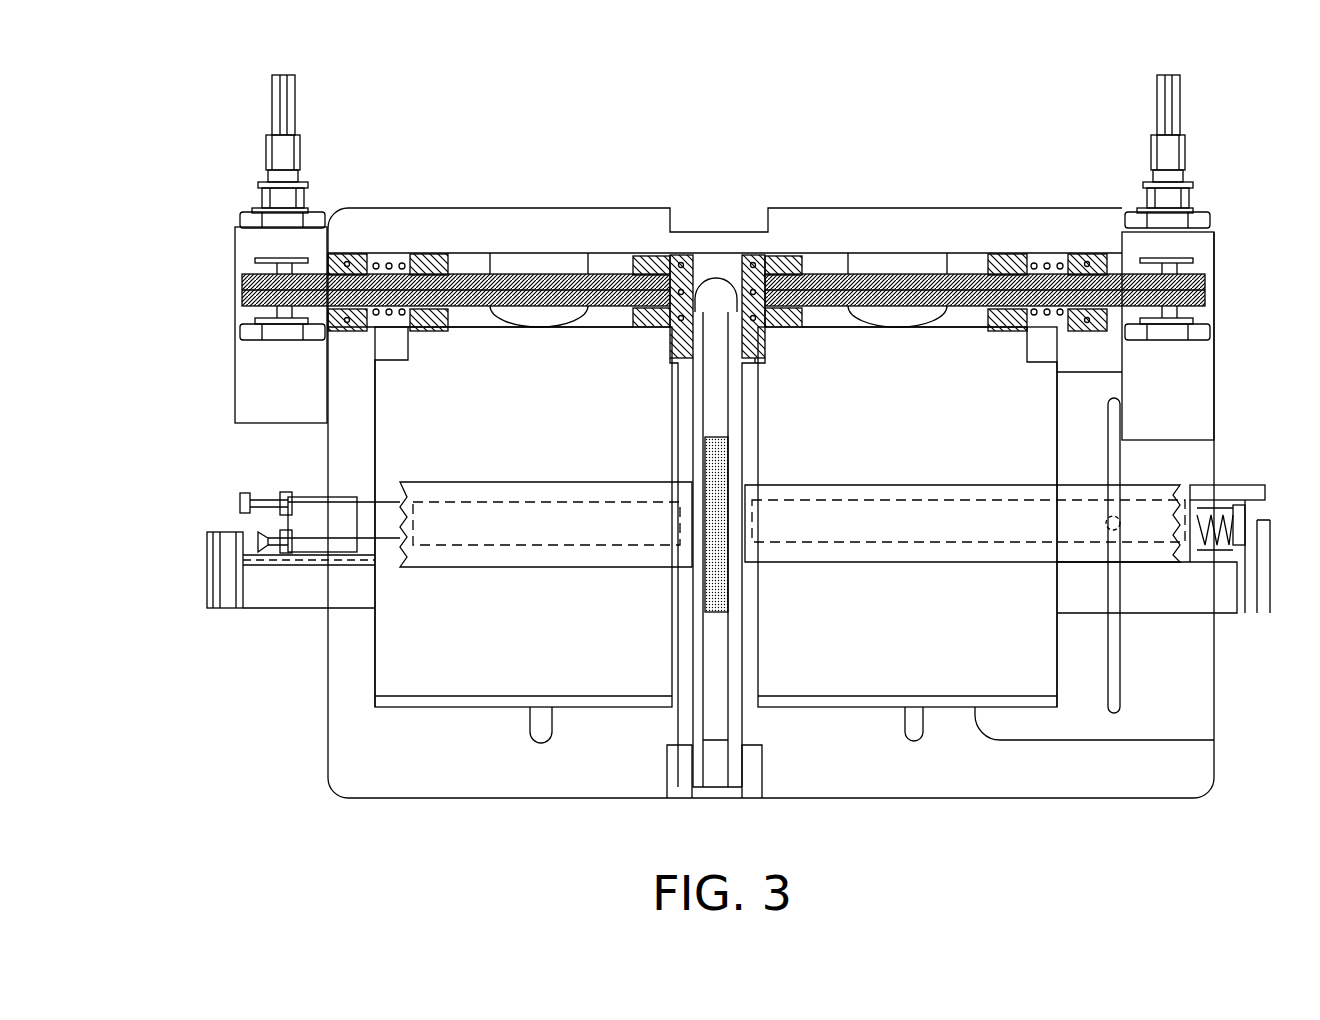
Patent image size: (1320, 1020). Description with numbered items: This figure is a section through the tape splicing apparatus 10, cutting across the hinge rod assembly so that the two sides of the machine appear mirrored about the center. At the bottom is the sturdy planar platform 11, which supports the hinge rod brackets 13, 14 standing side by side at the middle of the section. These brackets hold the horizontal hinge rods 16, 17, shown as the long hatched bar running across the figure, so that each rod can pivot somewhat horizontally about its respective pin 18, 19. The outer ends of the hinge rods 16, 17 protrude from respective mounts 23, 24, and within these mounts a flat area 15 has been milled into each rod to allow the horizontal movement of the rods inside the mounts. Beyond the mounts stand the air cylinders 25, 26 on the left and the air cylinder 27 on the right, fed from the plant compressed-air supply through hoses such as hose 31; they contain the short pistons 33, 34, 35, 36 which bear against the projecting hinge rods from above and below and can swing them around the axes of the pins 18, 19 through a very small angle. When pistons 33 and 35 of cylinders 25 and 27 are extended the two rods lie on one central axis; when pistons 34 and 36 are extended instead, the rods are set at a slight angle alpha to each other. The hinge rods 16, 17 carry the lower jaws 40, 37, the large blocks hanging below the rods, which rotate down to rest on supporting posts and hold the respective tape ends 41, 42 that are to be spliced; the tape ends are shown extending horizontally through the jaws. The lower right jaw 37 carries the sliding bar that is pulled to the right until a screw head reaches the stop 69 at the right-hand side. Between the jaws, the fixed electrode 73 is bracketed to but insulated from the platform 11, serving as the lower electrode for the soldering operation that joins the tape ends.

The apparatus 10 is at (1197, 828).
The planar platform 11 is at (884, 800).
The hinge rod bracket 13 is at (678, 364).
The hinge rod bracket 14 is at (757, 368).
The flat area 15 is at (1110, 270).
The hinge rod 16 is at (500, 272).
The hinge rod 17 is at (940, 270).
The pin 18 is at (668, 330).
The pin 19 is at (770, 328).
The mount 23 is at (345, 332).
The mount 24 is at (1110, 322).
The air cylinder 25 is at (250, 237).
The air cylinder 26 is at (250, 380).
The air cylinder 27 is at (1212, 236).
The hose 31 is at (1180, 127).
The piston 33 is at (250, 270).
The piston 34 is at (275, 312).
The piston 35 is at (1205, 270).
The piston 36 is at (1180, 314).
The lower right jaw 37 is at (922, 435).
The lower left jaw 40 is at (543, 440).
The tape end 41 is at (614, 558).
The tape end 42 is at (782, 565).
The stop 69 is at (1230, 562).
The fixed electrode 73 is at (735, 475).